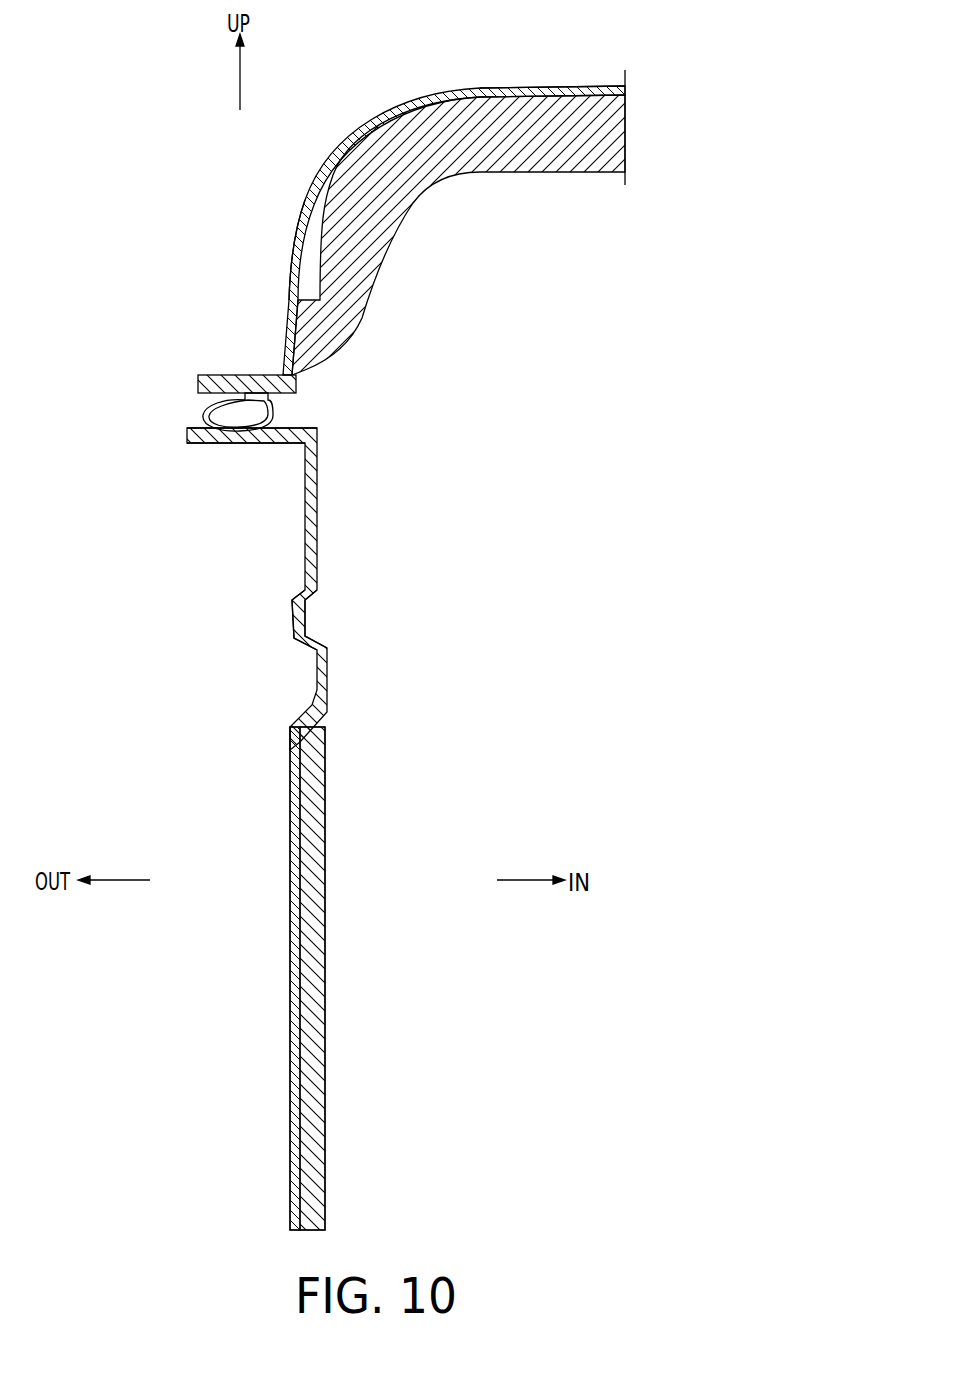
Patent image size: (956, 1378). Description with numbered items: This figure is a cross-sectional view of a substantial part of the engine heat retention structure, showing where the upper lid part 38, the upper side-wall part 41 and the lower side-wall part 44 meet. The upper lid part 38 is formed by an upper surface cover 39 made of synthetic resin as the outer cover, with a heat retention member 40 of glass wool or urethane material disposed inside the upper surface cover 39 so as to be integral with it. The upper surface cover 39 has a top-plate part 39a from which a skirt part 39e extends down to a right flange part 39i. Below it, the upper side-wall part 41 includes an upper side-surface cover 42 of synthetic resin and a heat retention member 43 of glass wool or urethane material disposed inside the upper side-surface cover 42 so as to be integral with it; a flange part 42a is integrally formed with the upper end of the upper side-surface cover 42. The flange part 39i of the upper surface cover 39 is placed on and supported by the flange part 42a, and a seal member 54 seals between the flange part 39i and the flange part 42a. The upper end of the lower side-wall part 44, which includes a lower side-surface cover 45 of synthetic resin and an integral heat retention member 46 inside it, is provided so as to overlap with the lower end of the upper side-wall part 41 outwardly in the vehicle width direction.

The upper lid part 38 is at (297, 243).
The upper surface cover 39 is at (388, 222).
The top-plate part 39a is at (550, 90).
The skirt part 39e is at (290, 287).
The flange part 39i is at (234, 374).
The heat retention member 40 is at (420, 187).
The upper side-wall part 41 is at (305, 538).
The upper side-surface cover 42 is at (248, 589).
The flange part 42a is at (233, 445).
The heat retention member 43 is at (316, 612).
The lower side-wall part 44 is at (290, 1041).
The lower side-surface cover 45 is at (246, 978).
The heat retention member 46 is at (317, 1000).
The seal member 54 is at (203, 411).